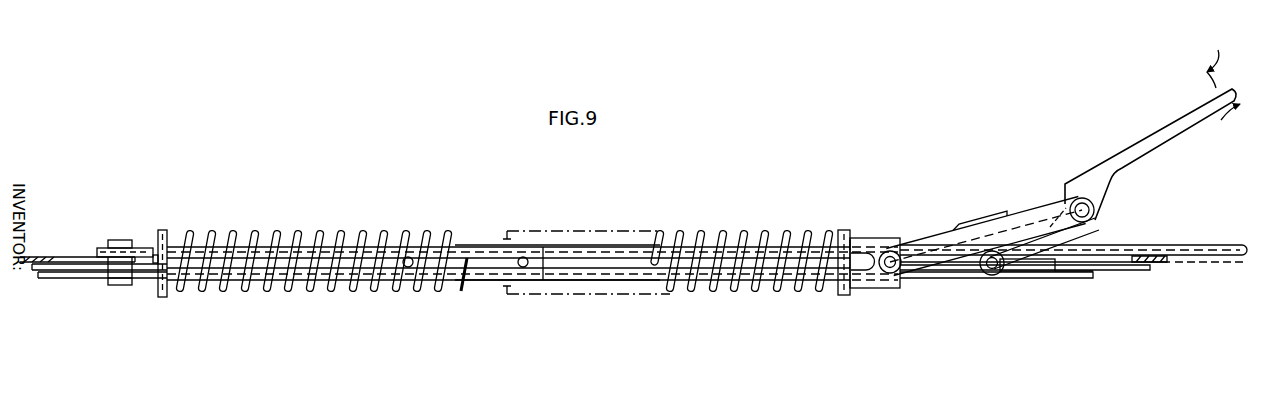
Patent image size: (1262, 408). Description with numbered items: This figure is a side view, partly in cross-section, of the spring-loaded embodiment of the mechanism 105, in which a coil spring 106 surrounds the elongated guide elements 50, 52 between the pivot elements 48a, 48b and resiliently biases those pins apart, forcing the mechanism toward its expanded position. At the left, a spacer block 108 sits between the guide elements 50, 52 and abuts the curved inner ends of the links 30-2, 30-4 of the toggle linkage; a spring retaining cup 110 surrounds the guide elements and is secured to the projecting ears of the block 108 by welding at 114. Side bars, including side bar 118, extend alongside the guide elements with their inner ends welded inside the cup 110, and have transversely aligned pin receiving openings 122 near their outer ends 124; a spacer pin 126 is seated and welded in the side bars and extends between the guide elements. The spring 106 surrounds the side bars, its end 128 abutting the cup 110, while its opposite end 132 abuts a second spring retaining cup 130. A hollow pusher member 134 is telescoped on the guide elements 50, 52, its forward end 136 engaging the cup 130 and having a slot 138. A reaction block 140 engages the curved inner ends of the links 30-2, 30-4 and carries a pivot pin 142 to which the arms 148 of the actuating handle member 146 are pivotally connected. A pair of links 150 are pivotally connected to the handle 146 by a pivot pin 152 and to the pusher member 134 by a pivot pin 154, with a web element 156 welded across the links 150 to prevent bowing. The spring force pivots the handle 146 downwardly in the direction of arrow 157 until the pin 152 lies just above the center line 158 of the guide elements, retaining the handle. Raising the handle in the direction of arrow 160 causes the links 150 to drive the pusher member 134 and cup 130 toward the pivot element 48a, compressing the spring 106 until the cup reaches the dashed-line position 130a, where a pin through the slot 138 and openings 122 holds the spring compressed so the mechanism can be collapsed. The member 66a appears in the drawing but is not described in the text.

The link 30-2 is at (100, 270).
The link 30-4 is at (42, 257).
The pivot element 48a is at (121, 240).
The pivot element 48b is at (1070, 272).
The guide element 50 is at (52, 279).
The guide element 52 is at (598, 247).
The clamp plate 66a is at (96, 248).
The mechanism 105 is at (313, 234).
The coil spring 106 is at (247, 233).
The spacer block 108 is at (149, 283).
The spring retaining cup 110 is at (166, 231).
The welding 114 is at (160, 280).
The side bar 118 is at (346, 282).
The pin receiving opening 122 is at (523, 268).
The outer end 124 is at (548, 273).
The spacer pin 126 is at (409, 268).
The end of spring 128 is at (178, 293).
The spring retaining cup 130 is at (845, 234).
The position of cup 130a is at (504, 228).
The end of spring 132 is at (841, 231).
The pusher member 134 is at (883, 238).
The forward end 136 is at (851, 246).
The slot 138 is at (866, 270).
The reaction block 140 is at (1040, 271).
The pivot pin 142 is at (990, 269).
The actuating handle member 146 is at (1183, 116).
The arms 148 is at (1033, 248).
The links 150 is at (931, 243).
The pivot pin 152 is at (1082, 203).
The pivot pin 154 is at (890, 268).
The web element 156 is at (977, 226).
The arrow 157 is at (1221, 120).
The center line 158 is at (1212, 263).
The arrow 160 is at (1220, 60).